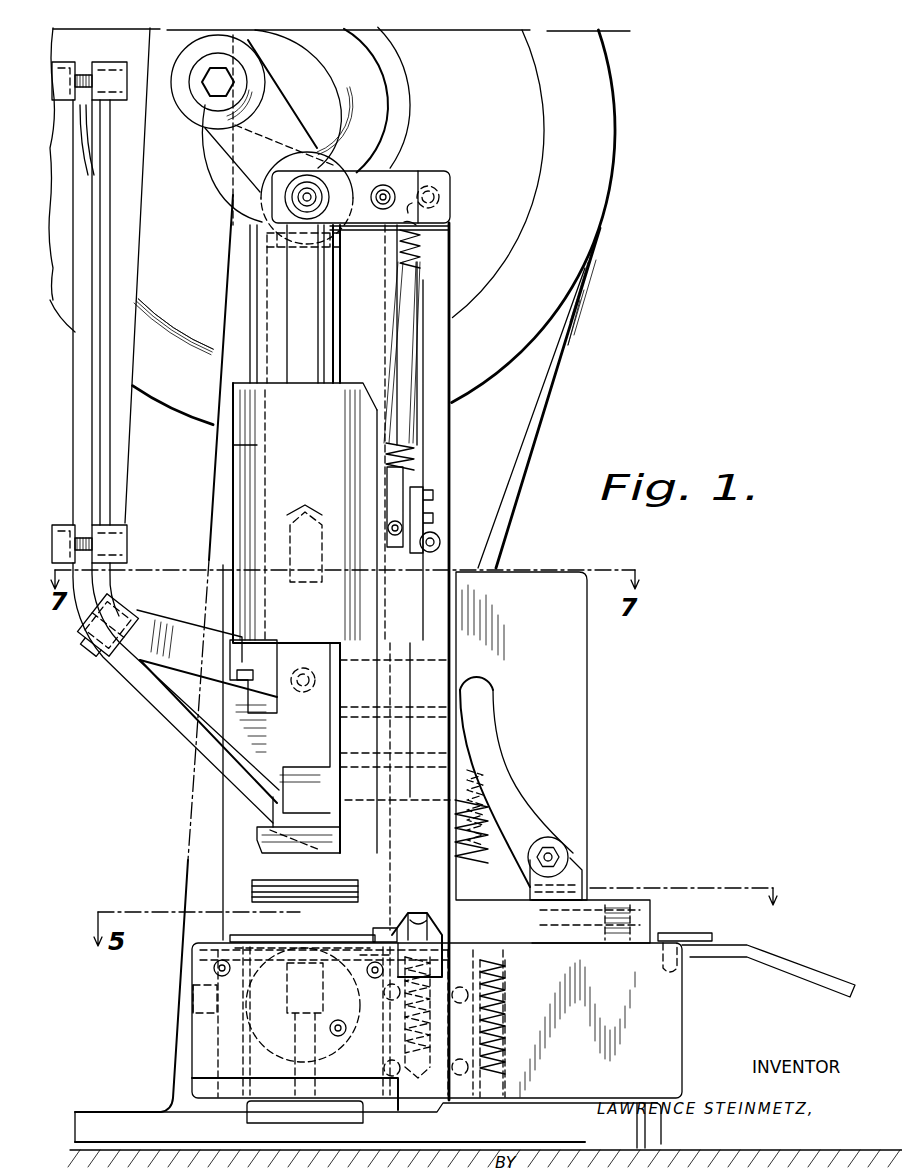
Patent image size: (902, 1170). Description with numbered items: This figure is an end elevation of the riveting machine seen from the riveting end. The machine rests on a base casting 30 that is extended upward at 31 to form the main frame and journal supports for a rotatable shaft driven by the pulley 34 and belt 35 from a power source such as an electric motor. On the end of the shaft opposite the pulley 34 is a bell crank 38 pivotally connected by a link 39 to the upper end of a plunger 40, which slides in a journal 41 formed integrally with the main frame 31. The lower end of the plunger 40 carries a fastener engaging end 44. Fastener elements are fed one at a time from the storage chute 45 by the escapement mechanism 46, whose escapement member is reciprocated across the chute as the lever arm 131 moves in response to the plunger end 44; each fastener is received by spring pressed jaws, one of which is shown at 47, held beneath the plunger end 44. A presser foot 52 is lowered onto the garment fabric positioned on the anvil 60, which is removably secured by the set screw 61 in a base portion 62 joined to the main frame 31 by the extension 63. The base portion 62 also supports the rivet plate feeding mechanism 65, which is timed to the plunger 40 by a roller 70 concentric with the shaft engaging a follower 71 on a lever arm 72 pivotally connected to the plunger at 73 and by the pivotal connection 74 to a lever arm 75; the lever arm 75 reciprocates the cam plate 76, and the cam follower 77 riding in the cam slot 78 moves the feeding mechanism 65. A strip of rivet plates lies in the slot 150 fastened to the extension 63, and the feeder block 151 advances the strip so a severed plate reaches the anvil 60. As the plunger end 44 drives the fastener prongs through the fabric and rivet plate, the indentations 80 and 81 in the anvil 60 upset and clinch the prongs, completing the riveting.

The base casting 30 is at (137, 1088).
The main frame 31 is at (192, 872).
The pulley 34 is at (587, 142).
The belt 35 is at (537, 400).
The bell crank 38 is at (293, 83).
The link 39 is at (303, 127).
The plunger 40 is at (293, 293).
The journal 41 is at (257, 445).
The fastener engaging end 44 is at (283, 728).
The storage chute 45 is at (83, 363).
The escapement mechanism 46 is at (127, 627).
The spring pressed jaw 47 is at (250, 835).
The presser foot 52 is at (250, 890).
The anvil 60 is at (267, 930).
The set screw 61 is at (185, 997).
The base portion 62 is at (205, 1042).
The extension 63 is at (653, 1023).
The rivet plate feeding mechanism 65 is at (700, 878).
The roller 70 is at (363, 105).
The follower 71 is at (387, 190).
The lever arm 72 is at (437, 173).
The pivotal connection 73 is at (293, 195).
The pivotal connection 74 is at (433, 200).
The lever arm 75 is at (430, 340).
The cam plate 76 is at (568, 683).
The cam follower 77 is at (553, 847).
The cam slot 78 is at (512, 790).
The indentation 80 is at (287, 940).
The indentation 81 is at (335, 940).
The lever arm 131 is at (193, 620).
The slot 150 is at (710, 940).
The feeder block 151 is at (635, 920).